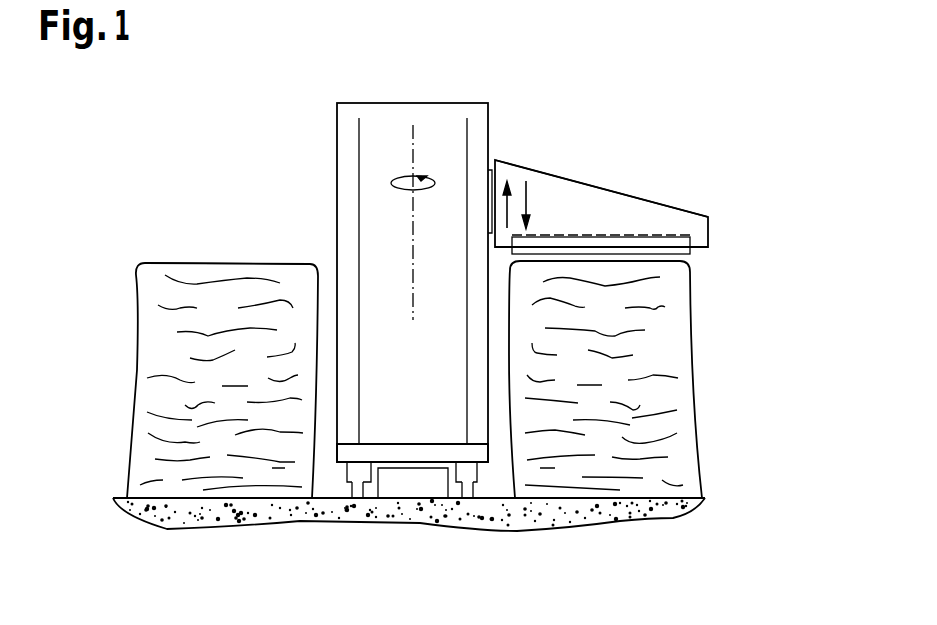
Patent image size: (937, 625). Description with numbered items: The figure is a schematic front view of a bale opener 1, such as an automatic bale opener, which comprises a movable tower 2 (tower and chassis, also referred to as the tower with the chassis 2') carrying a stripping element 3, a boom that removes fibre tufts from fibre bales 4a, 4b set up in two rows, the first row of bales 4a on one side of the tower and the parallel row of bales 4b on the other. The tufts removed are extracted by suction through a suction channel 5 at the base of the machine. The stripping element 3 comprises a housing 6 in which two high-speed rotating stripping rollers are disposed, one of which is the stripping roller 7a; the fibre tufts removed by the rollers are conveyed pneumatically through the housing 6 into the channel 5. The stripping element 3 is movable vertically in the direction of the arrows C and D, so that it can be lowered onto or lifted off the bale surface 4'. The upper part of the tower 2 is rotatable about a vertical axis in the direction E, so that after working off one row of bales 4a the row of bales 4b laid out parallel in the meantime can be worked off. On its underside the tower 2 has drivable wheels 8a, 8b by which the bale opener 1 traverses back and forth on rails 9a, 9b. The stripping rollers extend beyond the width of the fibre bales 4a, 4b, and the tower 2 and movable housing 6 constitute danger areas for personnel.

The bale opener 1 is at (537, 141).
The movable tower 2 is at (387, 282).
The tower with the chassis 2' is at (412, 533).
The stripping element 3 is at (615, 198).
The bale surface 4' is at (206, 224).
The fibre bales 4a is at (682, 358).
The fibre bales 4b is at (140, 366).
The suction channel 5 is at (403, 490).
The housing 6 is at (655, 213).
The stripping roller 7a is at (690, 253).
The drivable wheel 8a is at (349, 479).
The drivable wheel 8b is at (477, 477).
The rail 9a is at (356, 492).
The rail 9b is at (469, 490).
The direction of vertical movement C is at (508, 215).
The direction of vertical movement D is at (527, 199).
The direction of rotation E is at (400, 178).